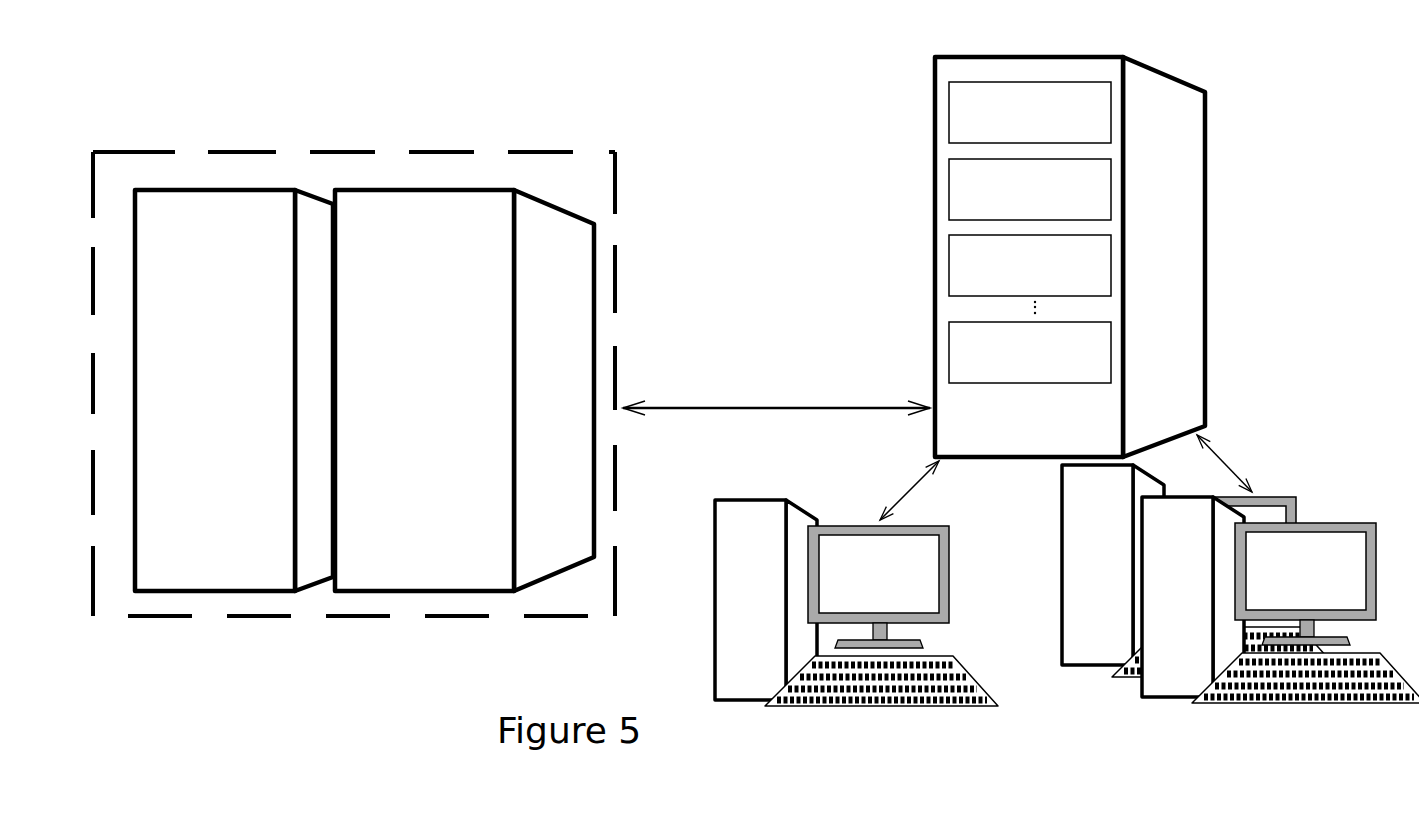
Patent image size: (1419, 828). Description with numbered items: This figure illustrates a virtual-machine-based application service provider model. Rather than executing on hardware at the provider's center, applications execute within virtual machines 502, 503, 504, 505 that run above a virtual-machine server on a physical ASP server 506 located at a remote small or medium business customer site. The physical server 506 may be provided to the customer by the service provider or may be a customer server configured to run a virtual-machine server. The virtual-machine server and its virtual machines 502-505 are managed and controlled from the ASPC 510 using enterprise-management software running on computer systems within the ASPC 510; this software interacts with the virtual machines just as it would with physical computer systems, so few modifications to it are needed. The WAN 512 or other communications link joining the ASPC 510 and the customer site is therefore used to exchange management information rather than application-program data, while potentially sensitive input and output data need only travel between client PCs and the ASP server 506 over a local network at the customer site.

The virtual machine 502 is at (948, 103).
The virtual machine 503 is at (948, 178).
The virtual machine 504 is at (951, 251).
The virtual machine 505 is at (948, 333).
The physical ASP server 506 is at (999, 56).
The ASPC 510 is at (261, 150).
The WAN 512 is at (692, 403).